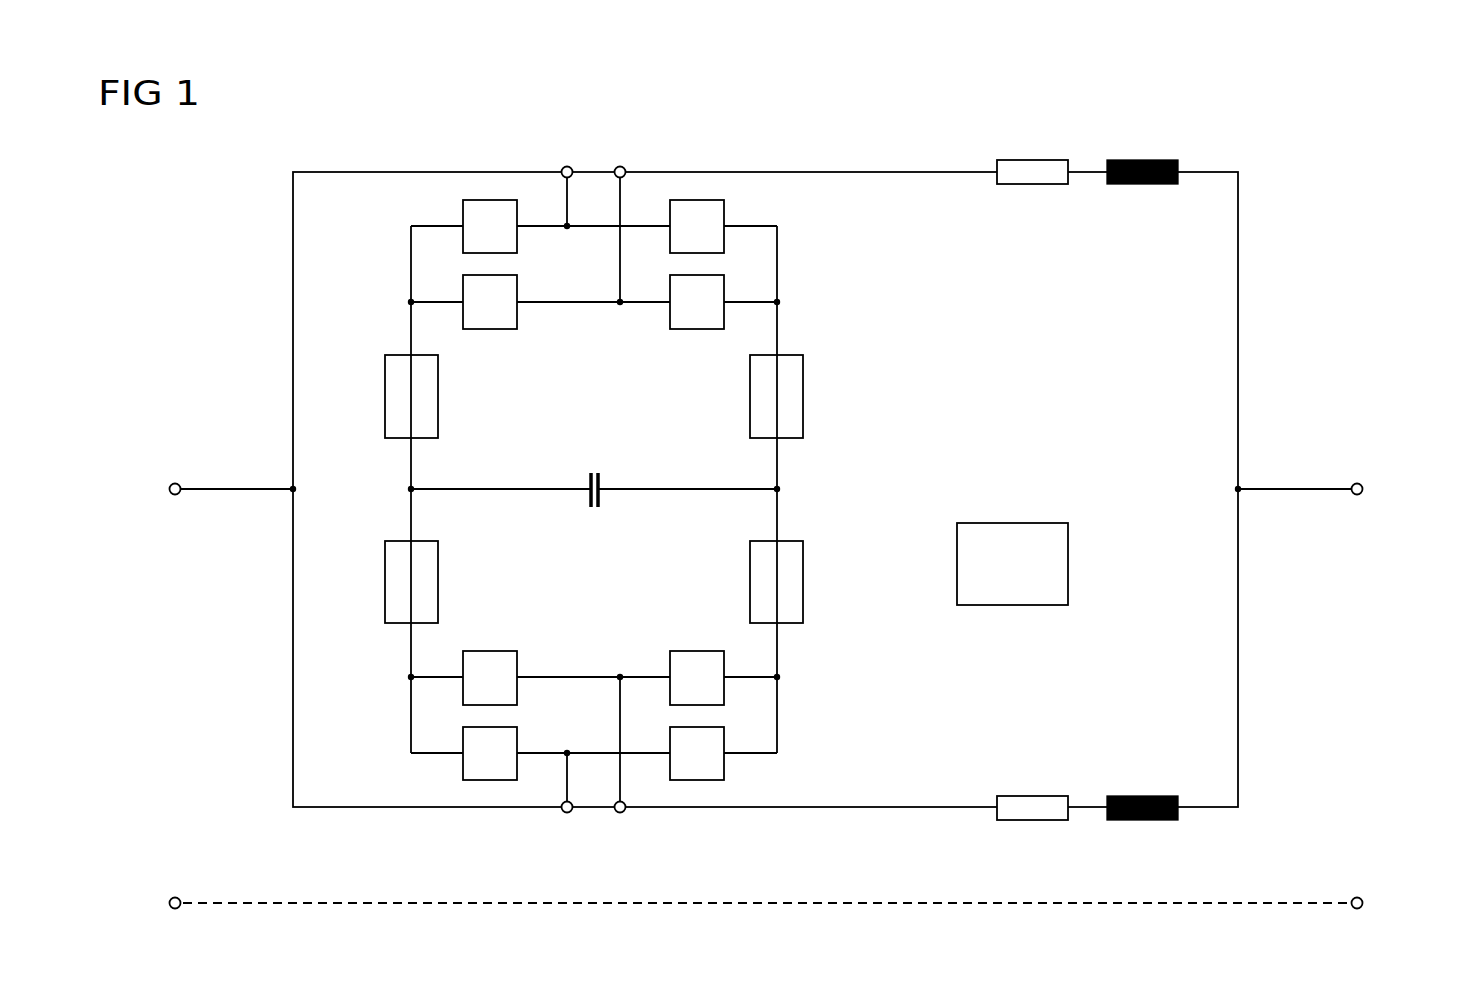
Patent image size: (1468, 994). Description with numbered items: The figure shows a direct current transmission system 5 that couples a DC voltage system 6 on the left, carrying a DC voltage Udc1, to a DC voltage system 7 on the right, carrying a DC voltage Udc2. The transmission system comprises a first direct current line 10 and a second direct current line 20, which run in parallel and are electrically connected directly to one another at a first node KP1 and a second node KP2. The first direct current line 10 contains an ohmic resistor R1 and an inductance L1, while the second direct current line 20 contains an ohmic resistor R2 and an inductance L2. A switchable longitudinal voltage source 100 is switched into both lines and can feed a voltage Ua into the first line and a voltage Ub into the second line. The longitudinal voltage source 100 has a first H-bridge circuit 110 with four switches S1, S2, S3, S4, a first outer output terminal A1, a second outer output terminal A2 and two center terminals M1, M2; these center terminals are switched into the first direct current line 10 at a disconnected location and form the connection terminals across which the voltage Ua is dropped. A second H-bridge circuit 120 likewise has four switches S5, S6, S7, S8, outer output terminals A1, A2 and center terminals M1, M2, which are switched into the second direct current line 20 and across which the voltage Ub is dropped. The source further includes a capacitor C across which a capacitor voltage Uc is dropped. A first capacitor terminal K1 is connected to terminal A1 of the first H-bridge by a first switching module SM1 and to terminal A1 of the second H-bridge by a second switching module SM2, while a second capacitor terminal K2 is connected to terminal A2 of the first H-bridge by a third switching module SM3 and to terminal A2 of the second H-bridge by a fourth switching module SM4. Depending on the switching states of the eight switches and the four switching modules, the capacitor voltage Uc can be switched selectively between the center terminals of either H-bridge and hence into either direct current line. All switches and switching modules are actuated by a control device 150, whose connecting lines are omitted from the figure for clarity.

The direct current transmission system 5 is at (198, 345).
The DC voltage system 6 is at (145, 545).
The DC voltage system 7 is at (1390, 548).
The first direct current line 10 is at (843, 815).
The second direct current line 20 is at (840, 170).
The switchable longitudinal voltage source 100 is at (866, 512).
The first H-bridge circuit 110 is at (825, 718).
The second H-bridge circuit 120 is at (826, 253).
The control device 150 is at (1068, 564).
The ohmic resistor R1 is at (1052, 822).
The ohmic resistor R2 is at (1050, 158).
The inductance L1 is at (1170, 822).
The inductance L2 is at (1165, 158).
The capacitor C is at (600, 500).
The first node KP1 is at (293, 489).
The second node KP2 is at (1238, 489).
The first capacitor terminal K1 is at (411, 489).
The second capacitor terminal K2 is at (777, 489).
The center terminal M1 is at (566, 166).
The center terminal M2 is at (621, 166).
The first outer output terminal A1 is at (411, 302).
The second outer output terminal A2 is at (777, 302).
The first switching module SM1 is at (438, 583).
The second switching module SM2 is at (438, 388).
The third switching module SM3 is at (803, 583).
The fourth switching module SM4 is at (803, 388).
The switch S1 is at (507, 774).
The switch S2 is at (507, 699).
The switch S3 is at (714, 774).
The switch S4 is at (714, 699).
The switch S5 is at (507, 323).
The switch S6 is at (507, 247).
The switch S7 is at (714, 323).
The switch S8 is at (714, 247).
The voltage Ua is at (632, 886).
The voltage Ub is at (636, 105).
The capacitor voltage Uc is at (636, 462).
The DC voltage Udc1 is at (175, 512).
The DC voltage Udc2 is at (1357, 512).